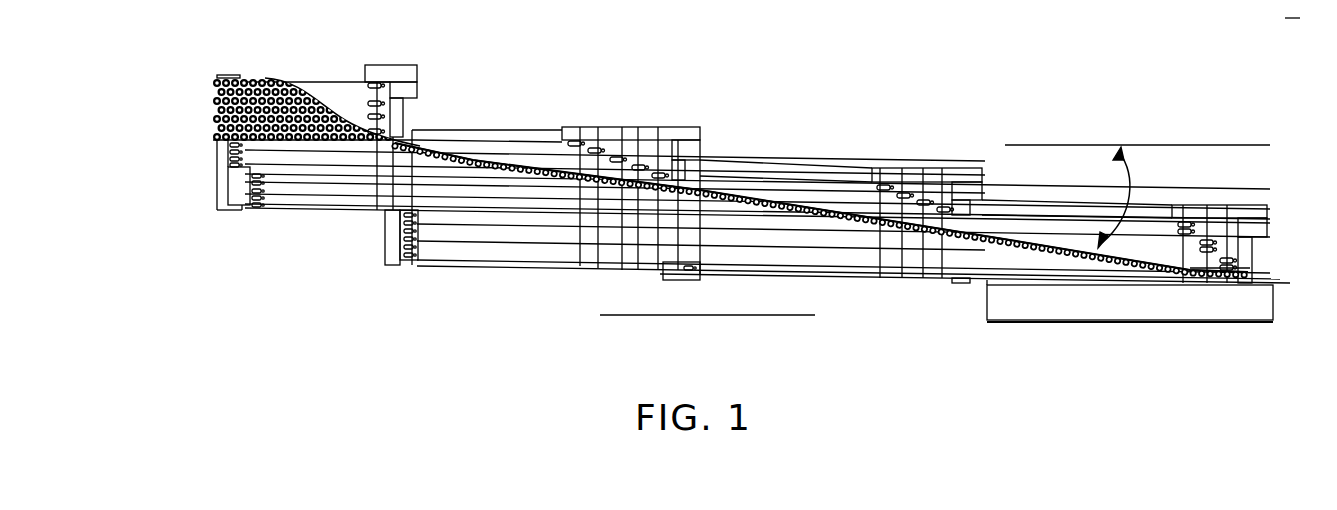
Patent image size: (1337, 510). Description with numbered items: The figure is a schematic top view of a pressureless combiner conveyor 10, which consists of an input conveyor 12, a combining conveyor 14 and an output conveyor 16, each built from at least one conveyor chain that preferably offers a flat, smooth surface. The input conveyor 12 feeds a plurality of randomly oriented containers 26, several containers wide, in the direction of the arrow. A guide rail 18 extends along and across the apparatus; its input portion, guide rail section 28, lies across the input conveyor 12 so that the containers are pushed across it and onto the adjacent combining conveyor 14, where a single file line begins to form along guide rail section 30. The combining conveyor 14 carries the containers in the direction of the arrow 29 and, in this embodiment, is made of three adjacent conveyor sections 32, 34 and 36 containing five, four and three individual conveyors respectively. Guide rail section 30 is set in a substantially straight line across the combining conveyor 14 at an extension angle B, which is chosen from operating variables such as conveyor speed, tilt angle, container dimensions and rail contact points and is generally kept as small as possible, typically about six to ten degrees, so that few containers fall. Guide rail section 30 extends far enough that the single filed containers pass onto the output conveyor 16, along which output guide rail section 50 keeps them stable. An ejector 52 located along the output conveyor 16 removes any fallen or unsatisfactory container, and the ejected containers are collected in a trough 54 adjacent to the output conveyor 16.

The pressureless combiner conveyor 10 is at (792, 69).
The input conveyor 12 is at (353, 90).
The combining conveyor 14 is at (352, 236).
The output conveyor 16 is at (925, 278).
The guide rail 18 is at (453, 148).
The containers 26 is at (217, 125).
The guide rail section 28 is at (300, 84).
The arrow 29 is at (635, 318).
The guide rail section 30 is at (773, 200).
The conveyor section 32 is at (582, 158).
The conveyor section 34 is at (843, 190).
The conveyor section 36 is at (557, 235).
The output guide rail section 50 is at (1193, 272).
The ejector 52 is at (1248, 251).
The trough 54 is at (1047, 292).
The extension angle B is at (1145, 195).